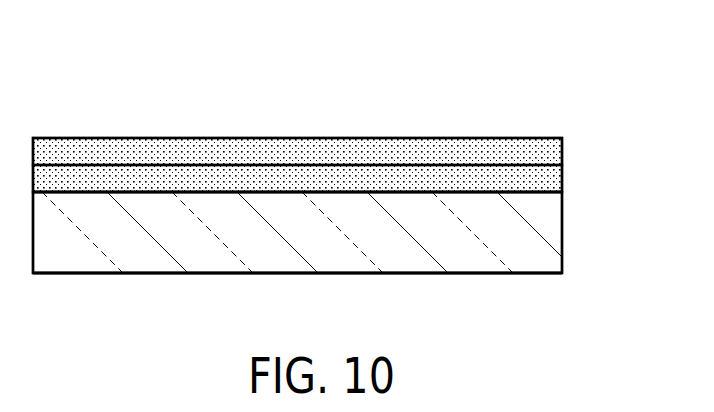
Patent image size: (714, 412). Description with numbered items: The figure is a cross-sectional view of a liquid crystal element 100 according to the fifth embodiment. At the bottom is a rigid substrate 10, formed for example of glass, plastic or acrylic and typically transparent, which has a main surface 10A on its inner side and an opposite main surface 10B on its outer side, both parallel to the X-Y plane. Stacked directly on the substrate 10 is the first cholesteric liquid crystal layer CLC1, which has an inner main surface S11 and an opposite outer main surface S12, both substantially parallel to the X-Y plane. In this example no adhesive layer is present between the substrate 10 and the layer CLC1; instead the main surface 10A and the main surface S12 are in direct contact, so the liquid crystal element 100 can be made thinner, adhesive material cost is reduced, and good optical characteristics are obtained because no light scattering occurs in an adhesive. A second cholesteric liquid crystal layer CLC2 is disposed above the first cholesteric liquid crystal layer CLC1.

The liquid crystal element 100 is at (544, 97).
The rigid substrate 10 is at (552, 225).
The main surface (inner surface) 10A is at (330, 192).
The main surface (outer surface) 10B is at (335, 273).
The main surface (inner surface) S11 is at (164, 192).
The main surface (outer surface) S12 is at (164, 192).
The first cholesteric liquid crystal layer CLC1 is at (563, 179).
The second cholesteric liquid crystal layer CLC2 is at (563, 153).